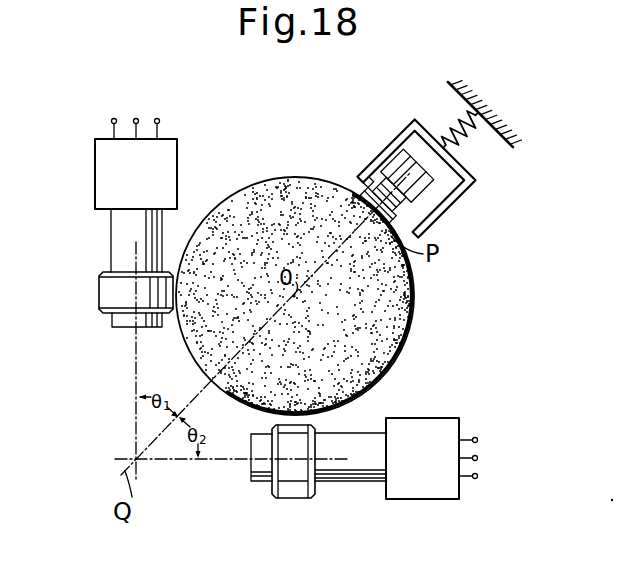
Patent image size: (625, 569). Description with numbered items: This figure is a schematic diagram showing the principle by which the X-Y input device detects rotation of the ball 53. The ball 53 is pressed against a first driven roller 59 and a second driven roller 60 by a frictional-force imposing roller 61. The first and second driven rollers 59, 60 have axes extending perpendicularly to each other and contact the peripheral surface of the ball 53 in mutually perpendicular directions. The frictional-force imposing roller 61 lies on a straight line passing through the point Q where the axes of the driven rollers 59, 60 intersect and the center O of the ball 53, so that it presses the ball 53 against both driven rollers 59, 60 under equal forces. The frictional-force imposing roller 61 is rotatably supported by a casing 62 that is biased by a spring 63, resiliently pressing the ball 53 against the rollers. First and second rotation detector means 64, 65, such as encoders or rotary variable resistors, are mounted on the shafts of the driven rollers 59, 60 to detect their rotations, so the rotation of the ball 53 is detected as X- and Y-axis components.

The ball 53 is at (414, 318).
The first driven roller 59 is at (99, 283).
The second driven roller 60 is at (299, 494).
The frictional-force imposing roller 61 is at (415, 166).
The casing 62 is at (456, 190).
The spring 63 is at (471, 133).
The first rotation detector means 64 is at (96, 141).
The second rotation detector means 65 is at (438, 497).